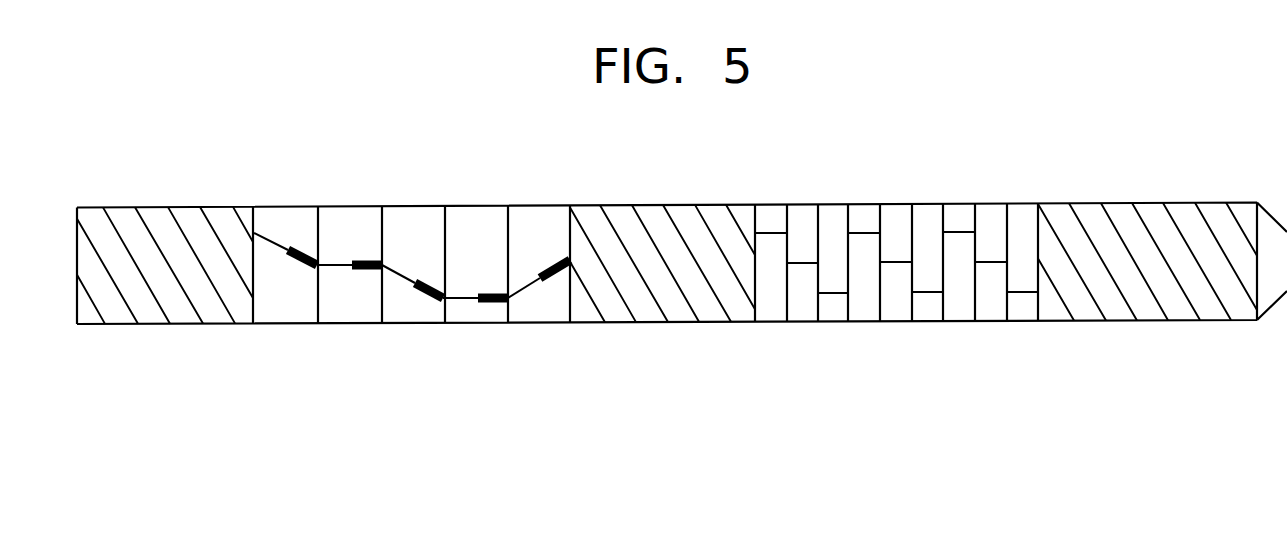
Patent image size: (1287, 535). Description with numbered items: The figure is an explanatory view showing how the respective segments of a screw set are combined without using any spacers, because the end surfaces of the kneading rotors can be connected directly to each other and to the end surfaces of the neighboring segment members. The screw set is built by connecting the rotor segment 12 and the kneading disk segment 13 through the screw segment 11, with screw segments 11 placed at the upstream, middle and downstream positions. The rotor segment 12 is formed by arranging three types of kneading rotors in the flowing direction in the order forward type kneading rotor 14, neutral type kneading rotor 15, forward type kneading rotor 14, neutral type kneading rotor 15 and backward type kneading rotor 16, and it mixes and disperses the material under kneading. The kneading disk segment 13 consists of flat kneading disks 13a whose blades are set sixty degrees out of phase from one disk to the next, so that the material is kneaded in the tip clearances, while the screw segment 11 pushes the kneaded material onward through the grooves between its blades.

The screw segment 11 is at (161, 328).
The rotor segment 12 is at (412, 342).
The kneading disk segment 13 is at (897, 320).
The kneading disk 13a is at (770, 323).
The forward type kneading rotor 14 is at (287, 324).
The neutral type kneading rotor 15 is at (353, 324).
The backward type kneading rotor 16 is at (539, 340).